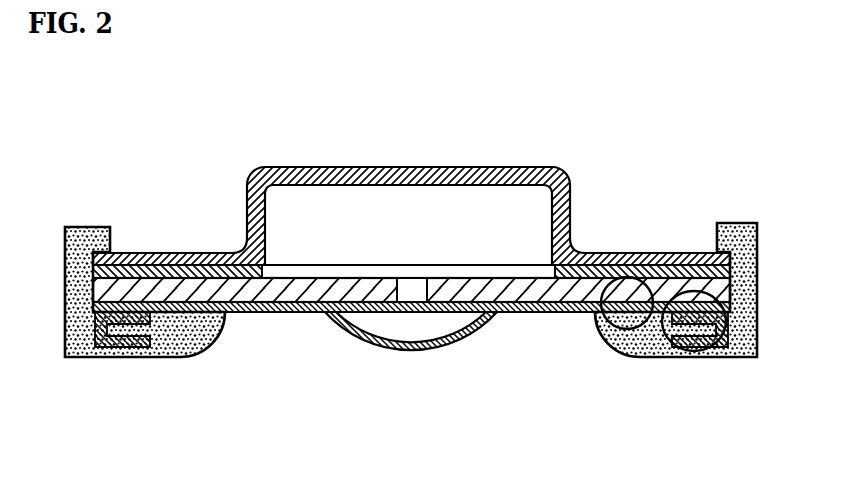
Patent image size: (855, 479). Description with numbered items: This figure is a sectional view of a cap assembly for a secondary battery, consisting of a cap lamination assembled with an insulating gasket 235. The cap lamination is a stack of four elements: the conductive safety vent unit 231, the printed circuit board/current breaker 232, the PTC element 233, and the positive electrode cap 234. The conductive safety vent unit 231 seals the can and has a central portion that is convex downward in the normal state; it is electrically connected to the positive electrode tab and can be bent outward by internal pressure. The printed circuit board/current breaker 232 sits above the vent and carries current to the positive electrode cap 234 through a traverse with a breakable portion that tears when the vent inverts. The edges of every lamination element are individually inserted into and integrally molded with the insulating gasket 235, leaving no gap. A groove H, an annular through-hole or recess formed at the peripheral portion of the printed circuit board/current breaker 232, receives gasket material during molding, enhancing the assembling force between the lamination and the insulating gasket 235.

The conductive safety vent unit 231 is at (333, 320).
The printed circuit board/current breaker 232 is at (547, 294).
The PTC element 233 is at (463, 272).
The positive electrode cap 234 is at (385, 166).
The insulating gasket 235 is at (172, 348).
The groove H is at (649, 350).